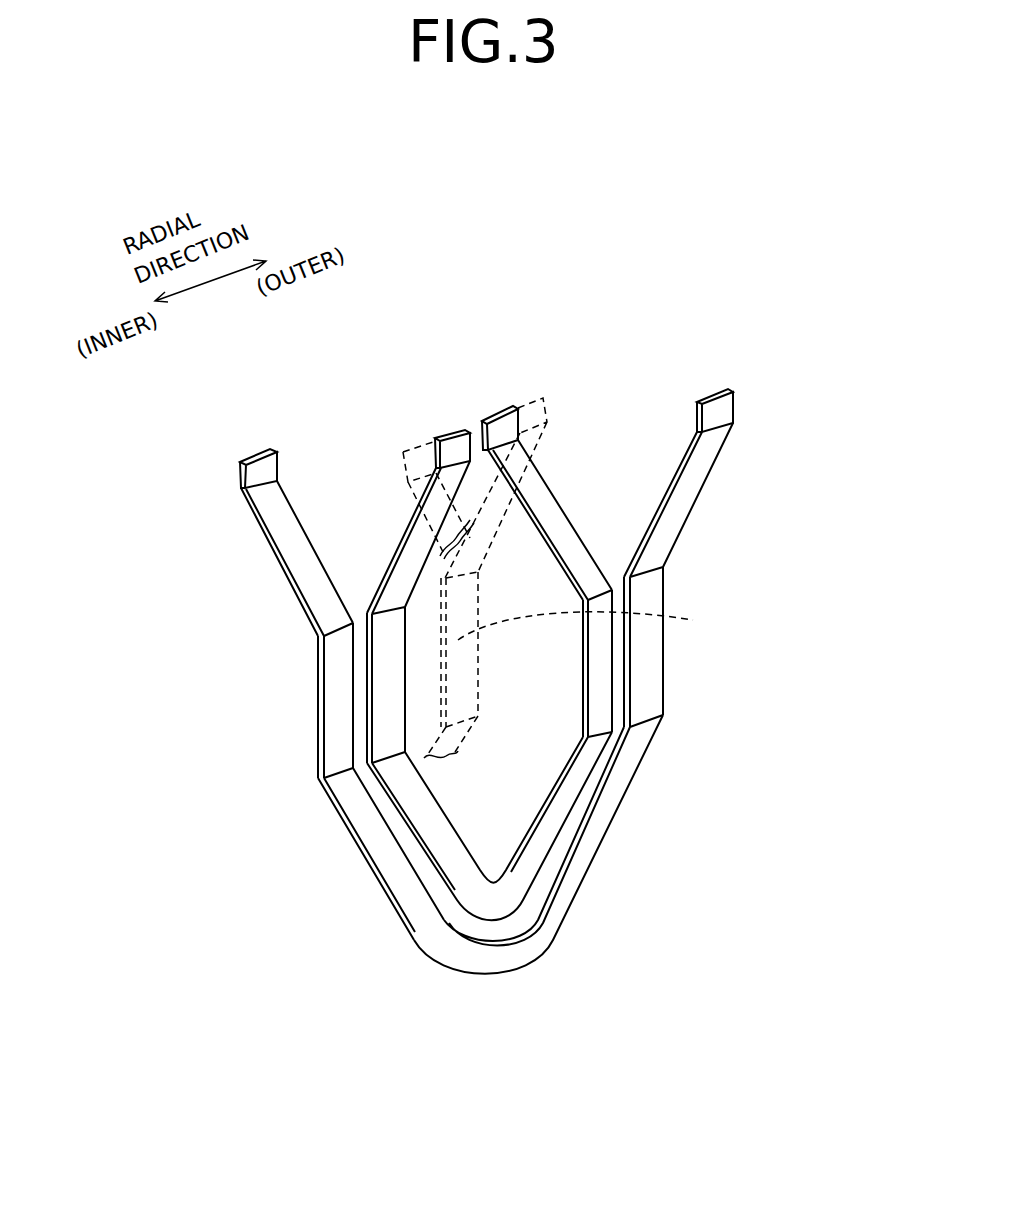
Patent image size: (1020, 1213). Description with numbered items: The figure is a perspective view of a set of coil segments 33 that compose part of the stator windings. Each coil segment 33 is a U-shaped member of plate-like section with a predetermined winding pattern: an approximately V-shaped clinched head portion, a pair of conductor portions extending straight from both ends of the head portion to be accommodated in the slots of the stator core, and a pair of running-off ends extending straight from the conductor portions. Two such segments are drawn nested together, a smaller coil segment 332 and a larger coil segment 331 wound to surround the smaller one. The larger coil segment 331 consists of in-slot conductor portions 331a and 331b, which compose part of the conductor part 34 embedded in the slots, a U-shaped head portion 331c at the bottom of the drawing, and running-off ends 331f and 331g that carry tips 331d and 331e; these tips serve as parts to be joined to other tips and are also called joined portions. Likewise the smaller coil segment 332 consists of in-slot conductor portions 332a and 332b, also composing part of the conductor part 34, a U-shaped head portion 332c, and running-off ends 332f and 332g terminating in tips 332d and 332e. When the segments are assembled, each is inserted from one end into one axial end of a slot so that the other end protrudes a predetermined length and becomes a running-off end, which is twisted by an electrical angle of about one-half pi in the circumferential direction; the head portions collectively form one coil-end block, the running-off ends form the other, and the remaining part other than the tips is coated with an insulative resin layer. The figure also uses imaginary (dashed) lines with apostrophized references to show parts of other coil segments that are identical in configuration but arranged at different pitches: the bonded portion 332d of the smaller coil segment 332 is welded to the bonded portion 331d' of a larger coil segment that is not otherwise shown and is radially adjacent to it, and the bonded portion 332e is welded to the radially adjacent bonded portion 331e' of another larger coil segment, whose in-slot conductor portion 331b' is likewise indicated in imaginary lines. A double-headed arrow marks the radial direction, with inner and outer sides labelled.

The coil segment 33 is at (488, 697).
The conductor part 34 is at (282, 755).
The larger coil segment 331 is at (488, 729).
The in-slot conductor portion 331a is at (335, 660).
The in-slot conductor portion 331b is at (696, 647).
The U-shaped head portion 331c is at (437, 943).
The tip 331d is at (204, 469).
The tip 331e is at (771, 410).
The running-off end 331f is at (288, 554).
The running-off end 331g is at (700, 468).
The bonded portion of another larger coil segment 331d' is at (382, 464).
The bonded portion of another larger coil segment 331e' is at (551, 557).
The in-slot conductor portion of another larger coil segment 331b' is at (617, 623).
The smaller coil segment 332 is at (491, 678).
The in-slot conductor portion 332a is at (388, 710).
The in-slot conductor portion 332b is at (607, 715).
The U-shaped head portion 332c is at (502, 903).
The tip 332d is at (453, 448).
The tip 332e is at (503, 428).
The running-off end 332f is at (412, 560).
The running-off end 332g is at (540, 495).